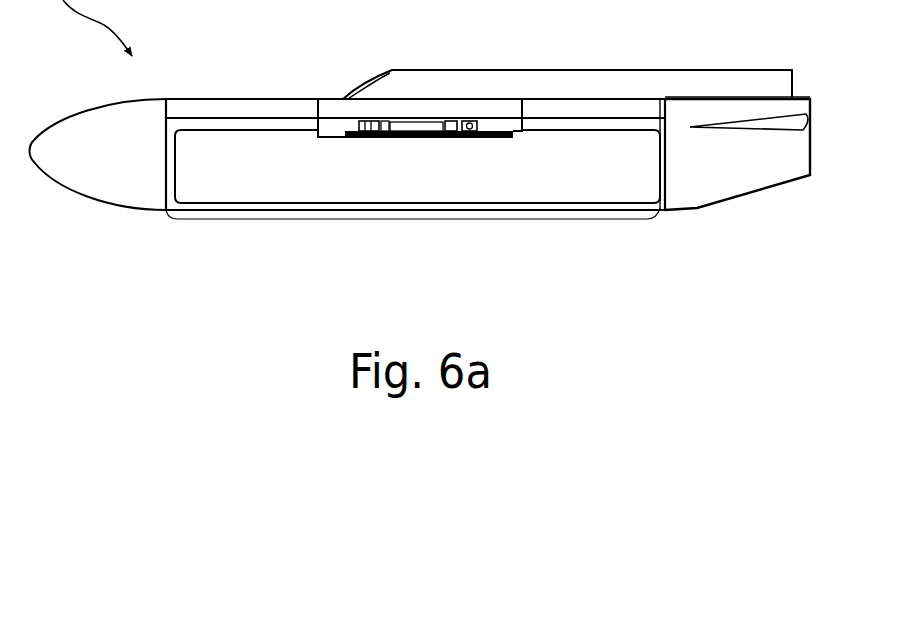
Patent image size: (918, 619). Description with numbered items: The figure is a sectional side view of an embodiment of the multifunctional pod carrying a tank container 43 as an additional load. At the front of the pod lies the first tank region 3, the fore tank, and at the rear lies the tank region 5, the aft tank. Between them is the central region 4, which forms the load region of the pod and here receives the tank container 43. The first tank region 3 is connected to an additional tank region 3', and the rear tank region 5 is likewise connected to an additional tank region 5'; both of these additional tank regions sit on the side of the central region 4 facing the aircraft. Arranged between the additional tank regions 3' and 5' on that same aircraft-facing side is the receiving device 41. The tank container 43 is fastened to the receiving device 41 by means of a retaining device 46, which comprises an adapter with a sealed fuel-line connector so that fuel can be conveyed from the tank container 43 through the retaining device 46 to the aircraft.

The first tank region 3 is at (98, 184).
The additional tank region 3' is at (242, 69).
The central region 4 is at (380, 220).
The receiving device 41 is at (335, 128).
The tank container 43 is at (618, 157).
The retaining device 46 is at (413, 127).
The tank region 5 is at (737, 180).
The additional tank region 5' is at (567, 61).